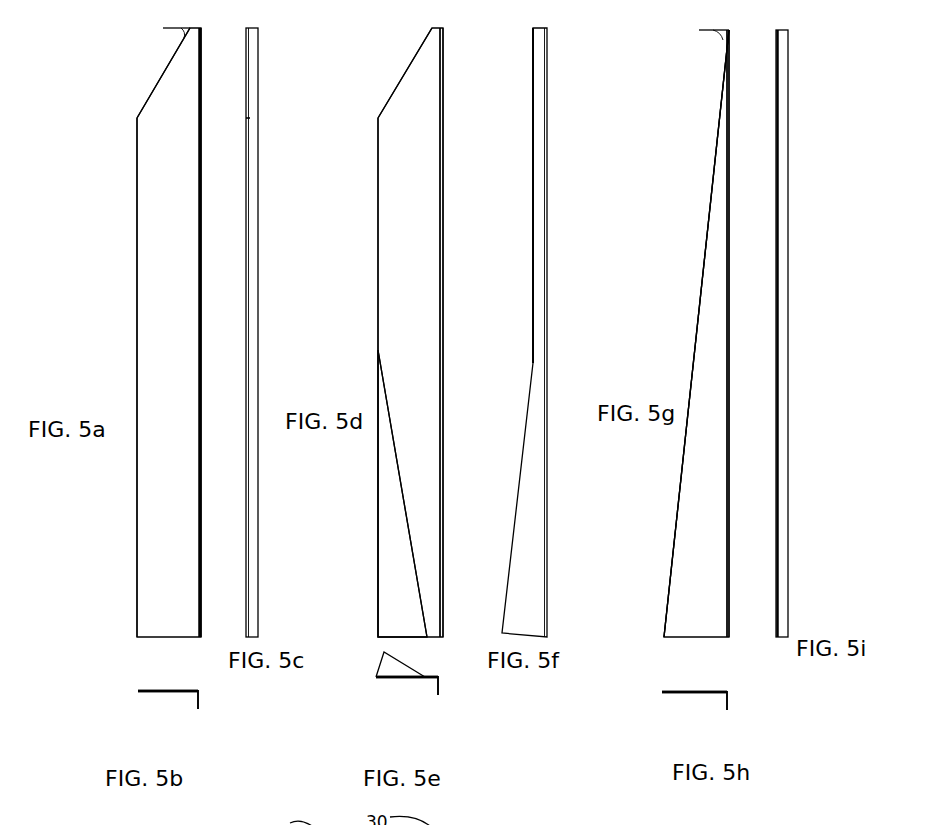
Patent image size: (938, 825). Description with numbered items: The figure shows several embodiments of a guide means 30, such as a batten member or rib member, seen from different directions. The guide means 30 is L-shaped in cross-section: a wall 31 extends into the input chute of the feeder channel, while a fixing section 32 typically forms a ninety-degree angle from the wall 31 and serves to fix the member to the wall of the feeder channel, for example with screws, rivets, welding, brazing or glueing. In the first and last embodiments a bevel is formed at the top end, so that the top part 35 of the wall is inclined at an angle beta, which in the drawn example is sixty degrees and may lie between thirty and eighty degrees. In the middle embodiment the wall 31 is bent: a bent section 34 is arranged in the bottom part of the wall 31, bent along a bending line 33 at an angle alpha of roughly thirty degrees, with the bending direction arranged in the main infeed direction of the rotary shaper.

In FIG. 5A, the guide means 30 is at (133, 276).
In FIG. 5B, the guide means 30 is at (178, 706).
In FIG. 5D, the guide means 30 is at (423, 256).
In FIG. 5E, the guide means 30 is at (418, 691).
In FIG. 5G, the guide means 30 is at (703, 196).
In FIG. 5H, the guide means 30 is at (705, 706).
In FIG. 5A, the wall 31 is at (145, 553).
In FIG. 5B, the wall 31 is at (140, 690).
In FIG. 5D, the wall 31 is at (403, 331).
In FIG. 5E, the wall 31 is at (393, 680).
In FIG. 5G, the wall 31 is at (680, 557).
In FIG. 5H, the wall 31 is at (683, 697).
In FIG. 5A, the fixing section 32 is at (200, 637).
In FIG. 5B, the fixing section 32 is at (204, 706).
In FIG. 5C, the fixing section 32 is at (258, 425).
In FIG. 5D, the fixing section 32 is at (441, 292).
In FIG. 5E, the fixing section 32 is at (440, 684).
In FIG. 5F, the fixing section 32 is at (540, 405).
In FIG. 5G, the fixing section 32 is at (730, 638).
In FIG. 5H, the fixing section 32 is at (730, 703).
In FIG. 5I, the fixing section 32 is at (790, 425).
In FIG. 5D, the bending line 33 is at (409, 572).
In FIG. 5D, the bent section 34 is at (397, 622).
In FIG. 5A, the top part 35 is at (150, 91).
In FIG. 5D, the top part 35 is at (400, 81).
In FIG. 5G, the top part 35 is at (702, 262).